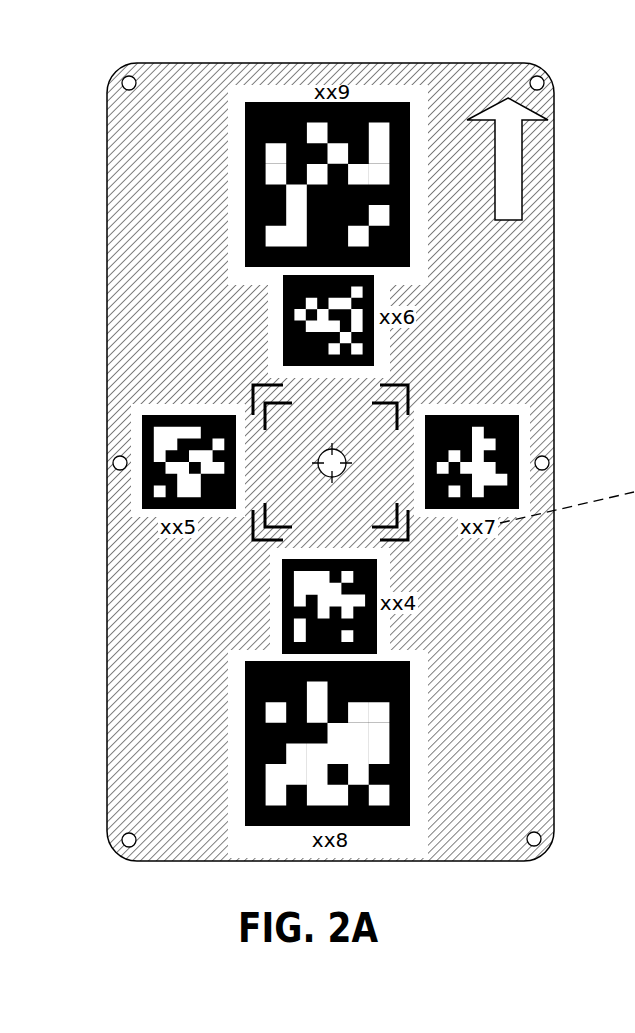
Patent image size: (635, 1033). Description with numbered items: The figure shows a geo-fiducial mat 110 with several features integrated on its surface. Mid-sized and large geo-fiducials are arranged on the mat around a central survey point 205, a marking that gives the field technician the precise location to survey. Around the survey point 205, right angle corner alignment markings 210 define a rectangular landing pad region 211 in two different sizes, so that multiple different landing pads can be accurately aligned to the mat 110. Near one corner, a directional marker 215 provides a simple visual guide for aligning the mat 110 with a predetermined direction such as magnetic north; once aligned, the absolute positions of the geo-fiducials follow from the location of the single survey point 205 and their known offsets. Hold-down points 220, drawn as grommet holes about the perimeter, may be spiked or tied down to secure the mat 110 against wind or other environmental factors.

The geo-fiducial mat 110 is at (178, 164).
The survey point 205 is at (343, 472).
The alignment markings 210 is at (253, 390).
The landing pad region 211 is at (286, 502).
The directional marker 215 is at (497, 113).
The hold-down points 220 is at (125, 79).